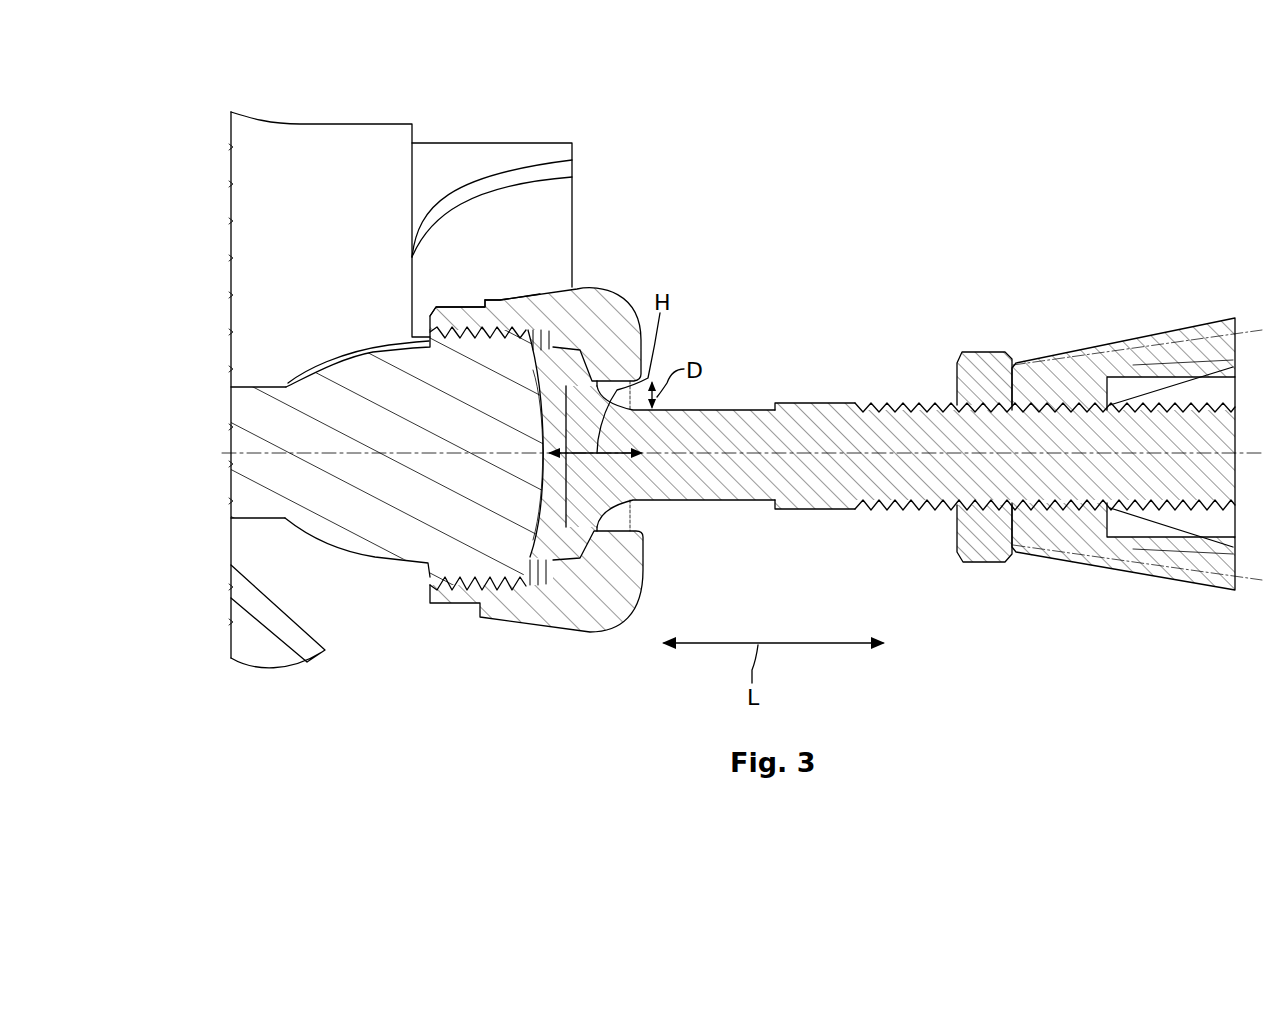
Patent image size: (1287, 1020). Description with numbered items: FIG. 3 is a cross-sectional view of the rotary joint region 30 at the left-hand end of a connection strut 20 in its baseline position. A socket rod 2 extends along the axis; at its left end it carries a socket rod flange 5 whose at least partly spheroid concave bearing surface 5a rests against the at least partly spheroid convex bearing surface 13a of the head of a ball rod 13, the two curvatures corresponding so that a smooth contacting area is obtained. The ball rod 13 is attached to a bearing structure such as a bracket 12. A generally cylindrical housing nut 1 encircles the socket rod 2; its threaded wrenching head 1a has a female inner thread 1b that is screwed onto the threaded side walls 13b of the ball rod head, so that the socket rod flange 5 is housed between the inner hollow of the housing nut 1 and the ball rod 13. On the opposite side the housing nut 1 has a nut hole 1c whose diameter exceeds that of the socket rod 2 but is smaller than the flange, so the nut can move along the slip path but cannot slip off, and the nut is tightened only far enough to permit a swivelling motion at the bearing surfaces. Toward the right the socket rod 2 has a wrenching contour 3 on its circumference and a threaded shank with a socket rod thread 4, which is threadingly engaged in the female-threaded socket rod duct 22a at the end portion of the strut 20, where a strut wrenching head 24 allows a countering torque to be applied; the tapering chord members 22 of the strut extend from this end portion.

The housing nut 1 is at (613, 287).
The threaded wrenching head 1a is at (443, 307).
The inner thread 1b is at (493, 327).
The nut hole 1c is at (640, 517).
The socket rod 2 is at (727, 412).
The wrenching contour 3 is at (822, 401).
The socket rod thread 4 is at (897, 402).
The socket rod flange 5 is at (567, 540).
The concave bearing surface 5a is at (546, 497).
The bracket 12 is at (243, 247).
The ball rod 13 is at (347, 548).
The convex bearing surface 13a is at (545, 427).
The threaded side walls 13b is at (453, 579).
The connection strut 20 is at (1109, 437).
The chord members 22 is at (1148, 350).
The socket rod duct 22a is at (1068, 480).
The strut wrenching head 24 is at (985, 352).
The rotary joint region 30 is at (851, 220).